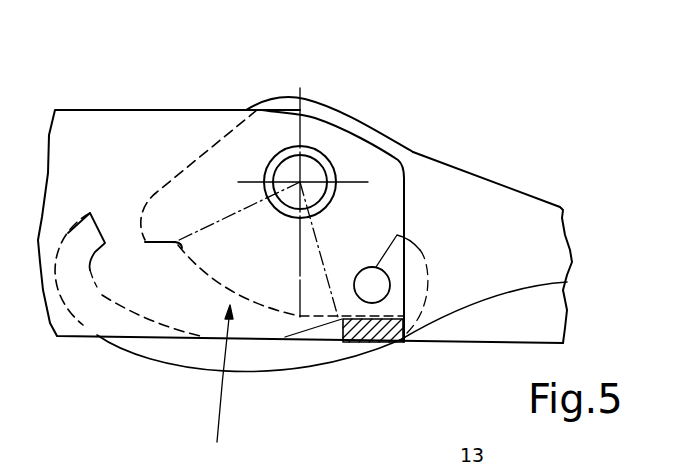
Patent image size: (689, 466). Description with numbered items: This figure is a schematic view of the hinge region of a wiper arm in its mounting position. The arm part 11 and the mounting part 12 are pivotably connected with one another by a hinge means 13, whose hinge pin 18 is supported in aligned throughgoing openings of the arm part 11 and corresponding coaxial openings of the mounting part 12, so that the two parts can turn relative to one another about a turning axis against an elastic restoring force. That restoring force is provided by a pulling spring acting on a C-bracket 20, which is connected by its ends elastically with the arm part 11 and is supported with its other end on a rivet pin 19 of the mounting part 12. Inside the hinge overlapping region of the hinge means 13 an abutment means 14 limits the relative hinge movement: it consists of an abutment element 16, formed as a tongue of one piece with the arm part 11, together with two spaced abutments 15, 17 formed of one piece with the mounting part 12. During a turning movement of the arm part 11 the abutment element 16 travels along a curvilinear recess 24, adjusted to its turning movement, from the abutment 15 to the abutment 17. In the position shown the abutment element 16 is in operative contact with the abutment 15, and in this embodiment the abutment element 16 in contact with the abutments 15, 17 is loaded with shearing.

The arm part 11 is at (113, 138).
The mounting part 12 is at (490, 223).
The hinge means 13 is at (334, 99).
The abutment means 14 is at (270, 315).
The abutment 15 is at (567, 282).
The abutment element 16 is at (380, 330).
The abutment 17 is at (173, 241).
The hinge pin 18 is at (312, 175).
The rivet pin 19 is at (371, 276).
The C-bracket 20 is at (178, 353).
The curvilinear recess 24 is at (220, 385).